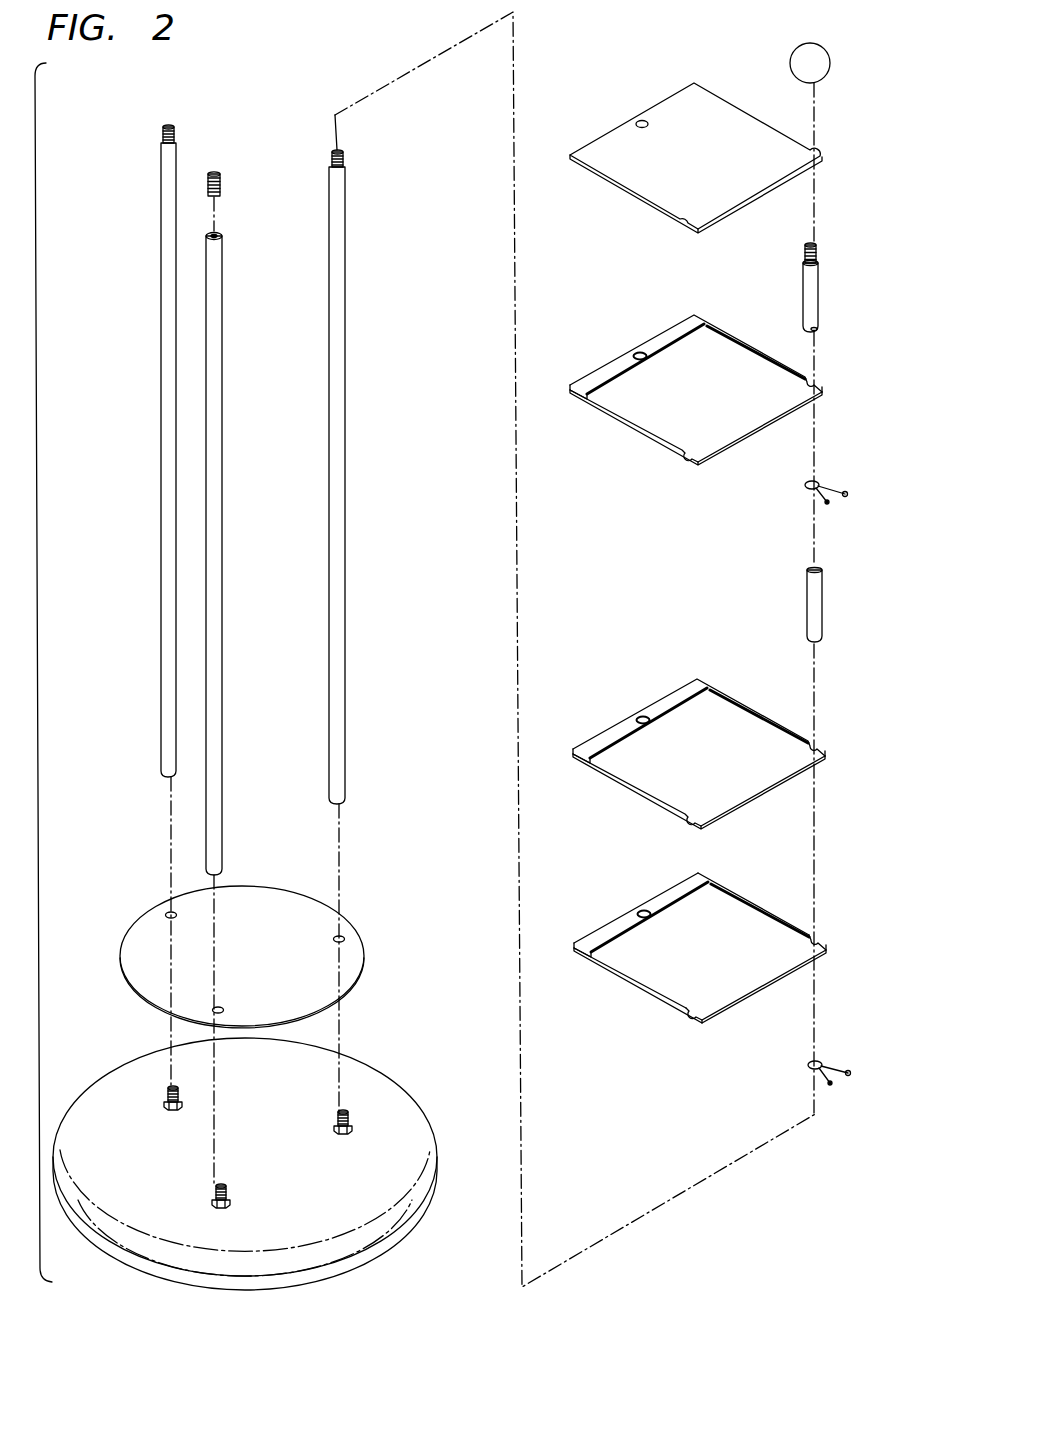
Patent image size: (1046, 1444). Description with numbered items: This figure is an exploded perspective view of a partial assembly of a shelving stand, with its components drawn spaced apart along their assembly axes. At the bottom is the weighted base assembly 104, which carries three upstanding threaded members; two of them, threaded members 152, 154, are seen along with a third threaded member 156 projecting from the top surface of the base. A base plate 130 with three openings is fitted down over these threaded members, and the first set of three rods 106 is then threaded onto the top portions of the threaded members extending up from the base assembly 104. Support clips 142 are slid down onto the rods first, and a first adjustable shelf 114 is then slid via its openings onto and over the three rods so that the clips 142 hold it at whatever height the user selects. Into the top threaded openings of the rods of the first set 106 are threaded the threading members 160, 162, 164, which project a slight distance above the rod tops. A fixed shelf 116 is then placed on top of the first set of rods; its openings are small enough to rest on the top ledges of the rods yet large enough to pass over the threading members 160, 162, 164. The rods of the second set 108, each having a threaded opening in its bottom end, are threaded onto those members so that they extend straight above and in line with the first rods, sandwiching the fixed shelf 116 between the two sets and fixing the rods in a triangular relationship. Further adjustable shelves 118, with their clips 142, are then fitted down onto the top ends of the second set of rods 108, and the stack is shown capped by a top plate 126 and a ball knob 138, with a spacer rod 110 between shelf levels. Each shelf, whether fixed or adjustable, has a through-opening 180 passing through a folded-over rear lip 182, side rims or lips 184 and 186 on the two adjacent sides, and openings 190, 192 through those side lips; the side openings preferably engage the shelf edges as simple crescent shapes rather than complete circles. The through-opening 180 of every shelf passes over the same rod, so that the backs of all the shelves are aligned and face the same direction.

The weighted base assembly 104 is at (364, 1226).
The first set of three rods 106 is at (372, 589).
The second set of rods 108 is at (818, 605).
The upper spacer rod 110 is at (818, 287).
The first adjustable shelf 114 is at (715, 974).
The fixed shelf 116 is at (718, 713).
The adjustable shelves 118 is at (637, 410).
The top plate 126 is at (636, 180).
The base plate 130 is at (338, 980).
The ball knob 138 is at (826, 57).
The support clips 142 is at (830, 488).
The threaded member 152 is at (343, 1112).
The threaded member 154 is at (218, 1189).
The screw 156 is at (172, 1088).
The threading member 160 is at (170, 125).
The threading member 162 is at (215, 170).
The threading member 164 is at (336, 150).
The through-opening 180 is at (642, 907).
The rear lip 182 is at (593, 940).
The side rim or lip 184 is at (625, 978).
The right flange 186 is at (760, 907).
The opening 190 is at (692, 1013).
The opening 192 is at (815, 937).